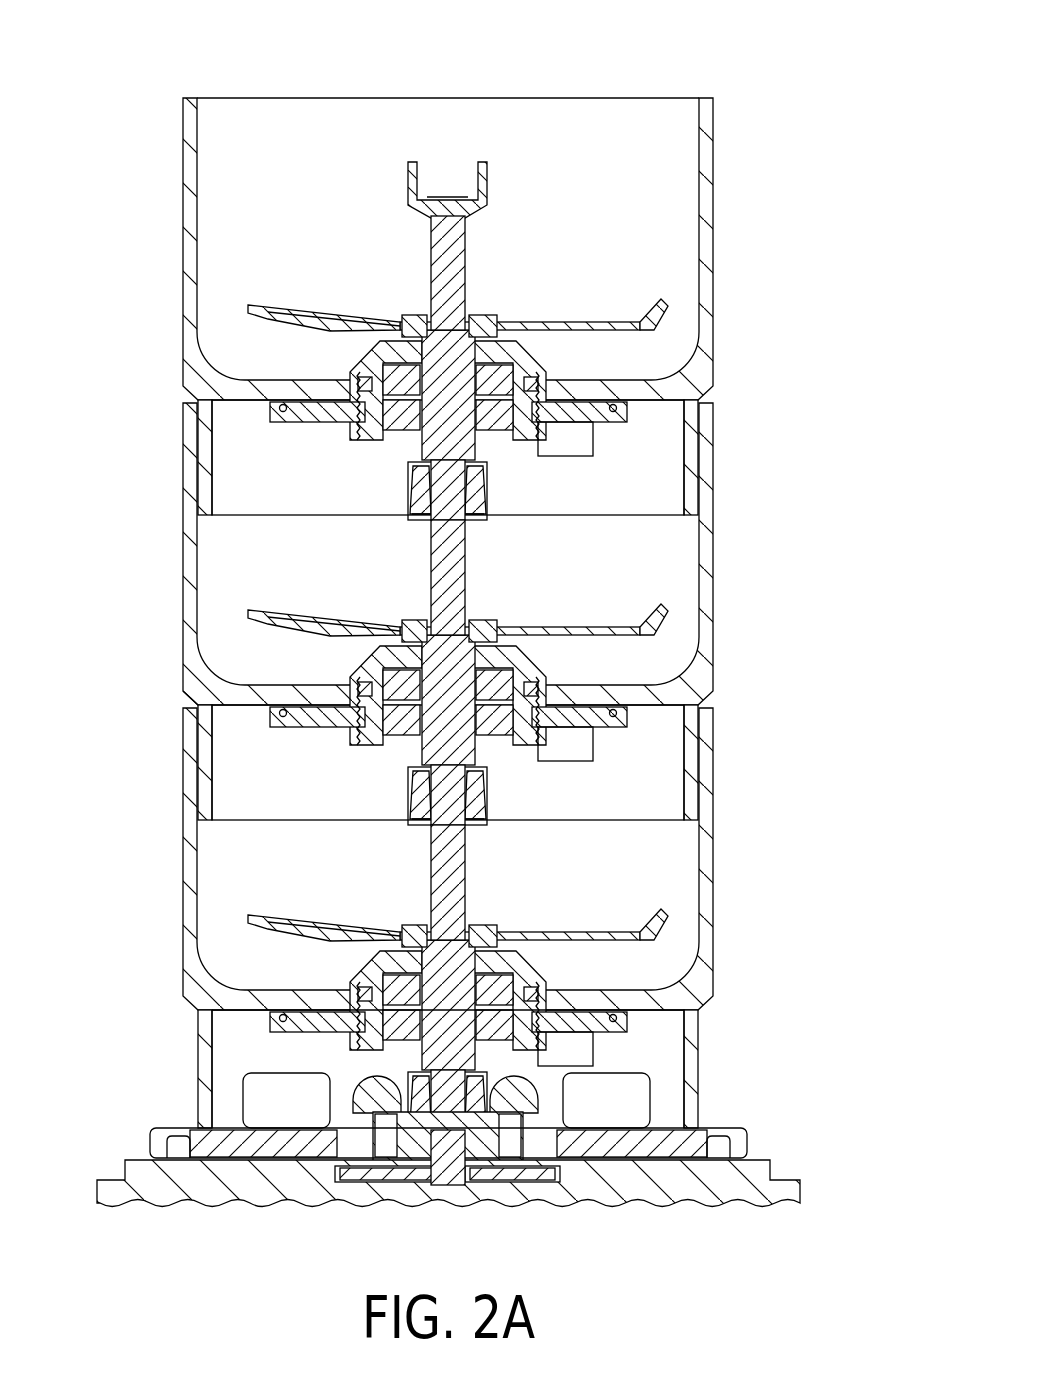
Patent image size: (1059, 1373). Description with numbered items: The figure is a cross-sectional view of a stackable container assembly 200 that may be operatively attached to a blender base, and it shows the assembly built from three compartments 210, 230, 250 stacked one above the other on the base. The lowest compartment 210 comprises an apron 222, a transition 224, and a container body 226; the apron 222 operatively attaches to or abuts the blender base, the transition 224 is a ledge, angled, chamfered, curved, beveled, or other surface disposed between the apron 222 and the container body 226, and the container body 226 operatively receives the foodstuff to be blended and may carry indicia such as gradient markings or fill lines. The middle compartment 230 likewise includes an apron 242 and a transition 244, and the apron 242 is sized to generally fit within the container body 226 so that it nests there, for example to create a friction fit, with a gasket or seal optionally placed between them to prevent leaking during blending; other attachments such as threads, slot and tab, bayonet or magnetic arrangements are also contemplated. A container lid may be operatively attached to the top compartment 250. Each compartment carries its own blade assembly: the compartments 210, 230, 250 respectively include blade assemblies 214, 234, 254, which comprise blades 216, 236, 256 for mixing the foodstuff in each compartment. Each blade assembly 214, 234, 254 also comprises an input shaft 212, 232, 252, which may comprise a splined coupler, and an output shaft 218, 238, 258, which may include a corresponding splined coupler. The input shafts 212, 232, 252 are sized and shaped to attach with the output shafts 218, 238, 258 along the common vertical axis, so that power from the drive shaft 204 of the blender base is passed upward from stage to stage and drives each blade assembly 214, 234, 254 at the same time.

The container assembly 200 is at (462, 627).
The drive shaft 204 is at (478, 1160).
The compartment 210 is at (443, 979).
The input shaft 212 is at (482, 1075).
The blade assembly 214 is at (578, 977).
The blades 216 is at (582, 933).
The output shaft 218 is at (470, 880).
The apron 222 is at (197, 1087).
The transition 224 is at (196, 1015).
The container body 226 is at (184, 778).
The compartment 230 is at (182, 462).
The input shaft 232 is at (482, 800).
The blade assembly 234 is at (594, 672).
The blades 236 is at (582, 628).
The output shaft 238 is at (465, 575).
The apron 242 is at (205, 735).
The transition 244 is at (190, 697).
The compartment 250 is at (182, 213).
The input shaft 252 is at (482, 500).
The blade assembly 254 is at (600, 362).
The blades 256 is at (583, 318).
The output shaft 258 is at (468, 258).